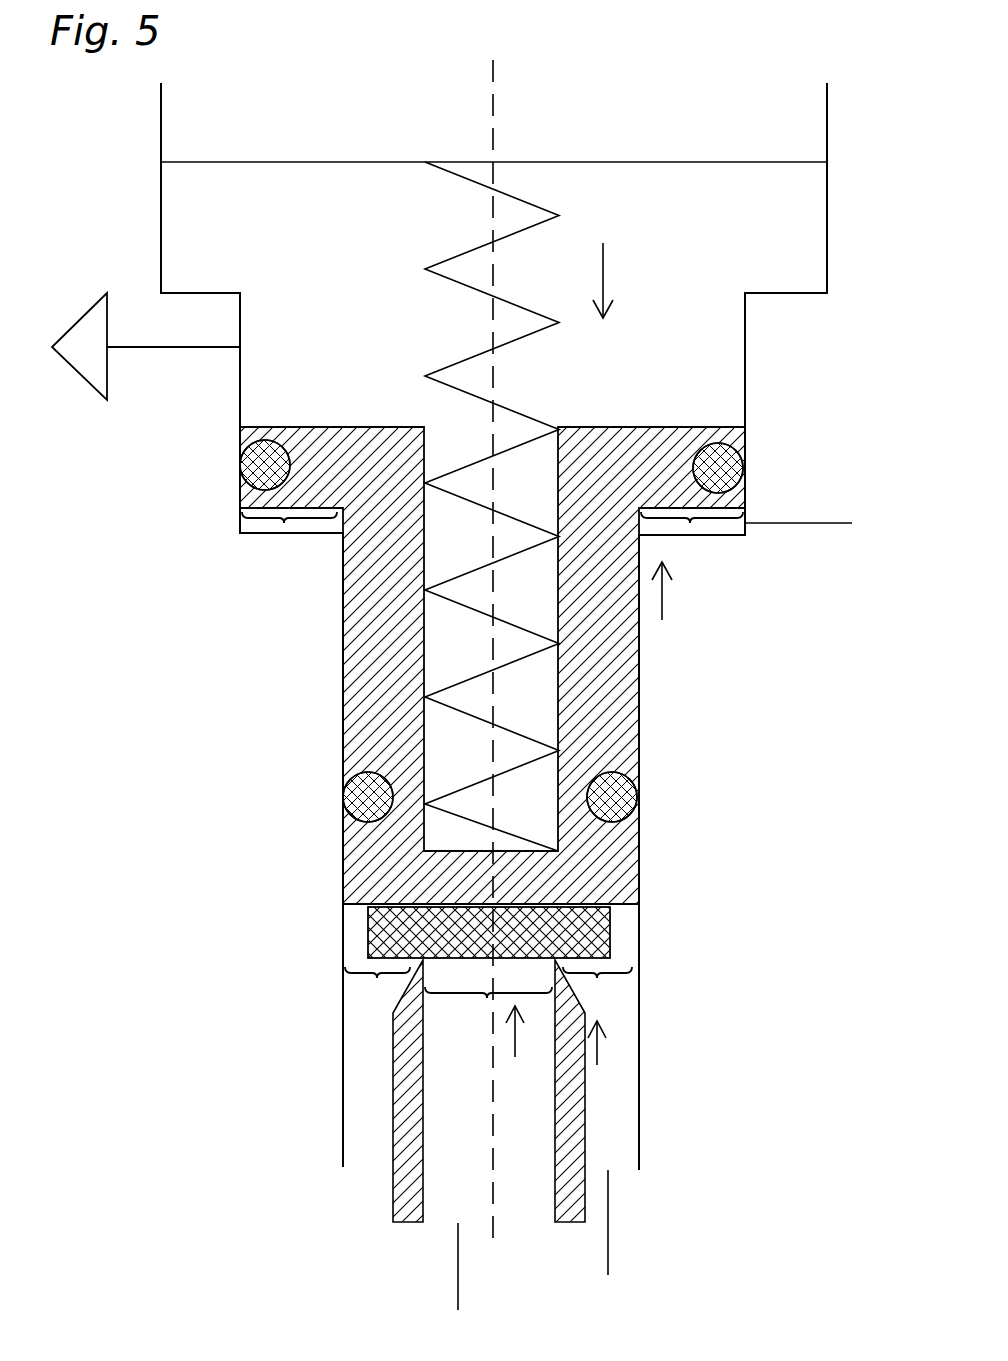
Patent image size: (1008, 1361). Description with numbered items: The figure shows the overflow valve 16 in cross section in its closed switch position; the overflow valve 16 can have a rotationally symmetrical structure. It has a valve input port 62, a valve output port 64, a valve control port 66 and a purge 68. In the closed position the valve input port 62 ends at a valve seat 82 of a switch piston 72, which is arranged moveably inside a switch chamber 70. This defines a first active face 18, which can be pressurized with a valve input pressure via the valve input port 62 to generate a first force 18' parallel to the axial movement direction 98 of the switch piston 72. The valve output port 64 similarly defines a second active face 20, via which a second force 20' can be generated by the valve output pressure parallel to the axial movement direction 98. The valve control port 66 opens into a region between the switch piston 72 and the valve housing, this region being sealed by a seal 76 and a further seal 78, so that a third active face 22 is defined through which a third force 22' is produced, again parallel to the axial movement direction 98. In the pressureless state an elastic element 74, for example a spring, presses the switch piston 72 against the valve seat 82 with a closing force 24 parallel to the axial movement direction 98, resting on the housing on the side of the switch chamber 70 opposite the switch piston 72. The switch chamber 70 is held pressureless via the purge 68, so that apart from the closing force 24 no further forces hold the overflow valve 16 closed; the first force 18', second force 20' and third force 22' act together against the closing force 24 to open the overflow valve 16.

The overflow valve 16 is at (172, 1200).
The first active face 18 is at (488, 1020).
The first force 18' is at (534, 1053).
The second active face 20 is at (488, 992).
The second force 20' is at (621, 1059).
The third active face 22 is at (492, 547).
The third force 22' is at (694, 601).
The closing force 24 is at (607, 268).
The valve input port 62 is at (455, 1253).
The valve output port 64 is at (610, 1212).
The valve control port 66 is at (800, 525).
The purge 68 is at (178, 348).
The switch chamber 70 is at (343, 353).
The switch piston 72 is at (622, 860).
The elastic element 74 is at (472, 357).
The seal 76 is at (631, 800).
The further seal 78 is at (728, 470).
The valve seat 82 is at (368, 932).
The axial movement direction 98 is at (500, 104).